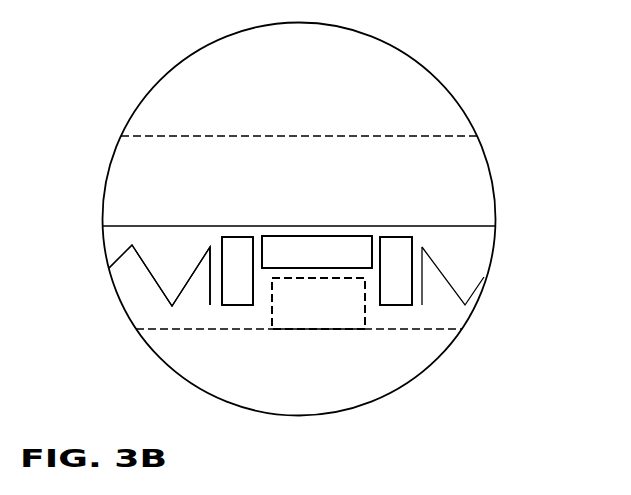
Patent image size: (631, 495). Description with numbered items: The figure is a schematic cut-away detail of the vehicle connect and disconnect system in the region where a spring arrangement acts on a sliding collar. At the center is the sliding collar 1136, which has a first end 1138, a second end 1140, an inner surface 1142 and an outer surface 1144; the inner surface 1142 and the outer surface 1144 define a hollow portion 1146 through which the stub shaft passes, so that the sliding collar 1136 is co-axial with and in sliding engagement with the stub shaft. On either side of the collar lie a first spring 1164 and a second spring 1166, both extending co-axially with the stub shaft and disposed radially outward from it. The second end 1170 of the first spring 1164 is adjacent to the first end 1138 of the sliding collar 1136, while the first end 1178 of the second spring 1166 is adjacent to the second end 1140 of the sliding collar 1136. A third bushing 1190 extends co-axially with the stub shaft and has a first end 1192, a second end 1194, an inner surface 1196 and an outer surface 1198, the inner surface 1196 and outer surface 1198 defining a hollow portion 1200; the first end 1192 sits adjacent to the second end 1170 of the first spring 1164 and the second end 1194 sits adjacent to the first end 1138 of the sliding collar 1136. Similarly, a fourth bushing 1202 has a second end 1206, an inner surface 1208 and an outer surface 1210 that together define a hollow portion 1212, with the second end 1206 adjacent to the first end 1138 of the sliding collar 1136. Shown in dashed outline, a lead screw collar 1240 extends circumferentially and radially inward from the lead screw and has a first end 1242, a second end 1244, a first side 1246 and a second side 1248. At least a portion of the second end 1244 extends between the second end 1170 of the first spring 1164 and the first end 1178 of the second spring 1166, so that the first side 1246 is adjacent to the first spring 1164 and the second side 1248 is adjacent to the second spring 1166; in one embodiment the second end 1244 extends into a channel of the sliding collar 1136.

The sliding collar 1136 is at (345, 246).
The first end 1138 is at (264, 232).
The second end 1140 is at (370, 236).
The inner surface 1142 is at (287, 236).
The outer surface 1144 is at (371, 269).
The hollow portion 1146 is at (308, 236).
The first spring 1164 is at (157, 288).
The second spring 1166 is at (437, 263).
The second end 1170 is at (213, 293).
The first end 1178 is at (422, 283).
The third bushing 1190 is at (224, 236).
The first end 1192 is at (210, 246).
The second end 1194 is at (254, 306).
The inner surface 1196 is at (233, 236).
The outer surface 1198 is at (236, 304).
The hollow portion 1200 is at (248, 236).
The fourth bushing 1202 is at (402, 305).
The second end 1206 is at (413, 242).
The inner surface 1208 is at (413, 238).
The outer surface 1210 is at (413, 305).
The hollow portion 1212 is at (402, 236).
The lead screw collar 1240 is at (323, 330).
The first end 1242 is at (310, 330).
The second end 1244 is at (296, 279).
The first side 1246 is at (273, 312).
The second side 1248 is at (363, 310).